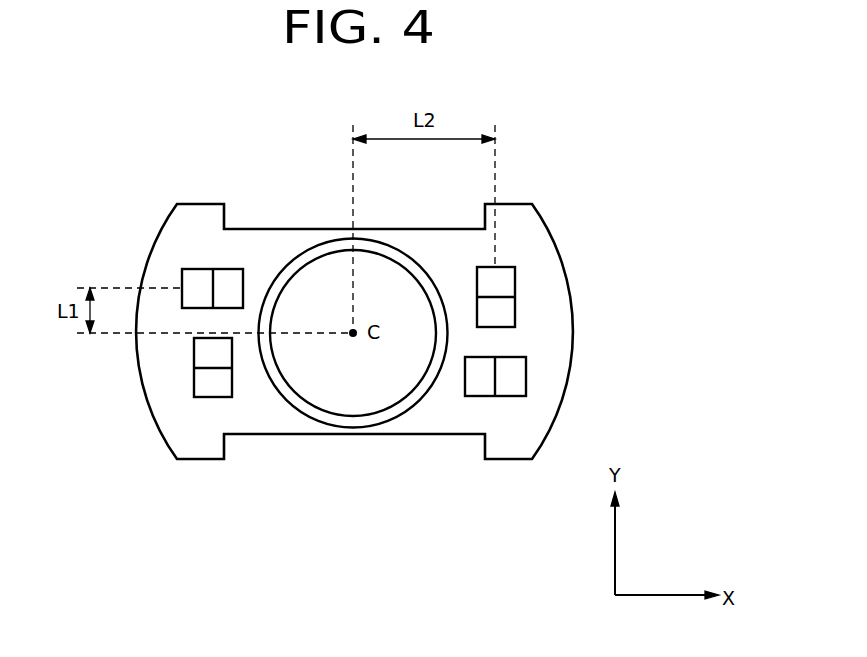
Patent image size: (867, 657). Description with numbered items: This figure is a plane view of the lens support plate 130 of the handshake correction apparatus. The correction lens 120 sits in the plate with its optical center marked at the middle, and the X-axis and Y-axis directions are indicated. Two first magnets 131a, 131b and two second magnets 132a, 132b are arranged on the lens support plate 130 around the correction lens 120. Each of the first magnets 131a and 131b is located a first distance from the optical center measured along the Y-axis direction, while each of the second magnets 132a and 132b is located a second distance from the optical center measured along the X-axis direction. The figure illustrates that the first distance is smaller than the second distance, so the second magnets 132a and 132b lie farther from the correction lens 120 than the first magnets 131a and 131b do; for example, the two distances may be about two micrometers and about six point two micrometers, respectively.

The correction lens 120 is at (352, 388).
The lens support plate 130 is at (527, 228).
The first magnet 131a is at (205, 269).
The first magnet 131b is at (526, 376).
The second magnet 132a is at (515, 283).
The second magnet 132b is at (194, 380).